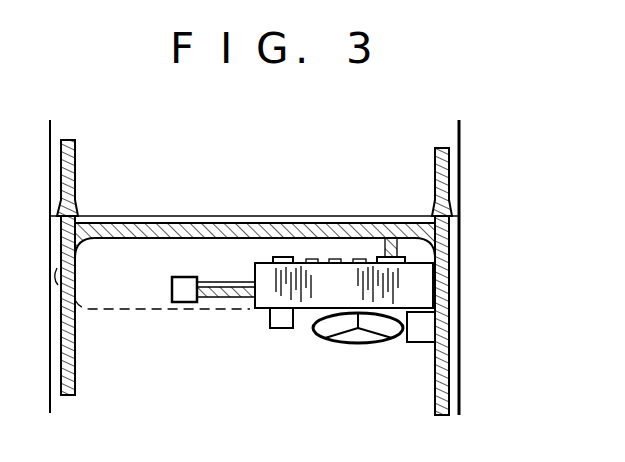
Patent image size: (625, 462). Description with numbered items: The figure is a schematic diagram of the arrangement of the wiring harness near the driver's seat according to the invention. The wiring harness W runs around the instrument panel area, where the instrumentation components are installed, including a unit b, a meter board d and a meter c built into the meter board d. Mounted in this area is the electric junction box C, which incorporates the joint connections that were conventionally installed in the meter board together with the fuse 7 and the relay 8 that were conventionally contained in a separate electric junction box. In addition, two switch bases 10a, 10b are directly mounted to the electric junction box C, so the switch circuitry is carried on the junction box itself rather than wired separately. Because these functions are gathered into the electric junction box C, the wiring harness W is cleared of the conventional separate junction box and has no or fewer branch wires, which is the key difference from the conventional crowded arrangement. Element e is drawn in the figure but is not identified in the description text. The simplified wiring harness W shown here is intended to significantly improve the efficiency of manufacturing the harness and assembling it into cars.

The wiring harness W is at (147, 222).
The electric junction box C is at (420, 285).
The relay 8 is at (283, 257).
The fuse 7 is at (360, 257).
The unit b is at (250, 302).
The switch base 10a is at (275, 328).
The meter c is at (308, 310).
The fan / rotor e is at (357, 343).
The meter board d is at (395, 322).
The switch base 10b is at (432, 330).